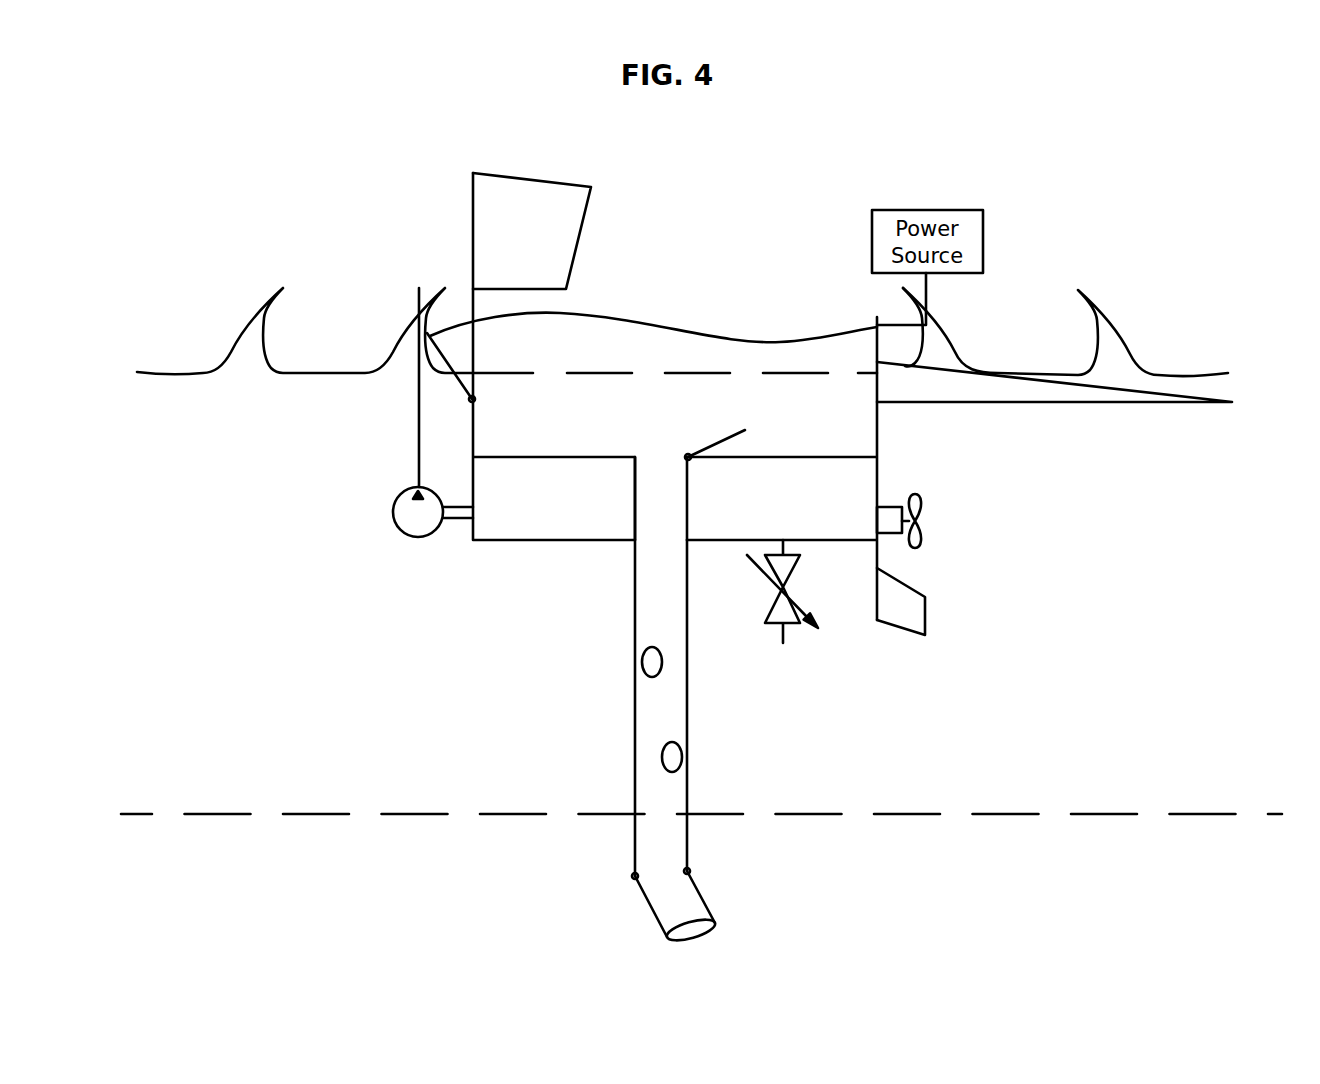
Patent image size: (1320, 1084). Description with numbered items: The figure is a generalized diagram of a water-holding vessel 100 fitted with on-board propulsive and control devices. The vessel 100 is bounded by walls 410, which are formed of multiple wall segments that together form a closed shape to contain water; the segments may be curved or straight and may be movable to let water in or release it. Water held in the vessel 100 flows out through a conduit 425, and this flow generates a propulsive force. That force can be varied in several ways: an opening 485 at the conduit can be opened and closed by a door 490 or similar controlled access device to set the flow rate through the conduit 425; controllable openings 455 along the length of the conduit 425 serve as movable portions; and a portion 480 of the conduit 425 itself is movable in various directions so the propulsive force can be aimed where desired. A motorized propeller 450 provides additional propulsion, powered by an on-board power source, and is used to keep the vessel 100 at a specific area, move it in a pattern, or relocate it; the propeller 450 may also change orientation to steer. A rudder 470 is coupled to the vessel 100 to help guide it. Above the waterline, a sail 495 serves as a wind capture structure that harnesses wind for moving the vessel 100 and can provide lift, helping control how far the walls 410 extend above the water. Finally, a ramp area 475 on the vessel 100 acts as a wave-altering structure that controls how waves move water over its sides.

The vessel 100 is at (1050, 265).
The walls 410 is at (880, 473).
The conduit 425 is at (648, 713).
The propeller 450 is at (922, 528).
The openings 455 is at (637, 655).
The rudder 470 is at (908, 613).
The ramp area 475 is at (1010, 398).
The movable portion of conduit 480 is at (690, 898).
The opening 485 is at (662, 465).
The door 490 is at (712, 443).
The sail 495 is at (487, 229).